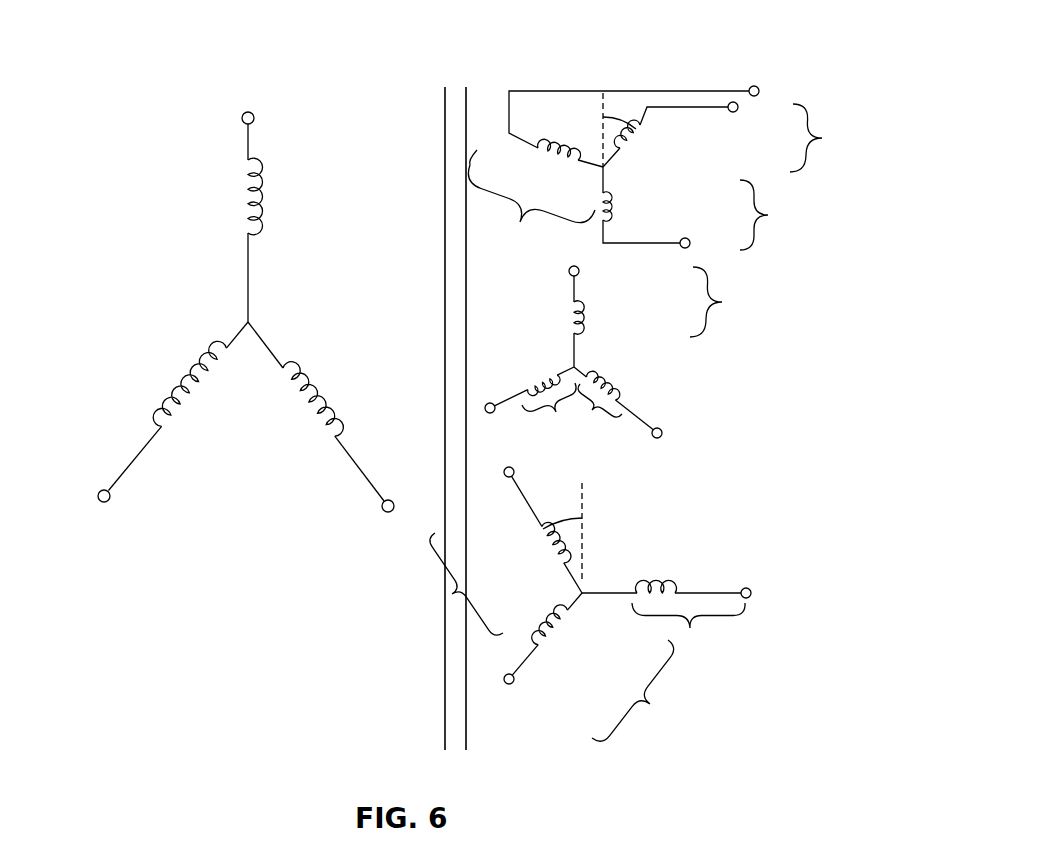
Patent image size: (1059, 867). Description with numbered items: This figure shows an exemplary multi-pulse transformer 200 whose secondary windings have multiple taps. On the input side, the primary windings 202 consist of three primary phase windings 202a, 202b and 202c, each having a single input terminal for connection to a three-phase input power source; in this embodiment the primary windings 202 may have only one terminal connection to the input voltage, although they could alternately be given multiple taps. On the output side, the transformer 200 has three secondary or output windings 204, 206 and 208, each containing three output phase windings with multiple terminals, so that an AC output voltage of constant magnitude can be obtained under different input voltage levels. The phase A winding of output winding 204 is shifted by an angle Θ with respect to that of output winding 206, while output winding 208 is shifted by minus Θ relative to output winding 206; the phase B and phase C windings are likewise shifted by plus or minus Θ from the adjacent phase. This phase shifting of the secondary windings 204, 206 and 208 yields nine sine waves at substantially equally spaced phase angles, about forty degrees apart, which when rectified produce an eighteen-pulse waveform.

The multi-pulse transformer 200 is at (583, 52).
The primary windings 202 is at (137, 106).
The primary phase winding 202a is at (222, 204).
The primary phase winding 202b is at (314, 383).
The primary phase winding 202c is at (202, 405).
The output winding 204 is at (822, 100).
The output winding 206 is at (777, 303).
The output winding 208 is at (775, 522).